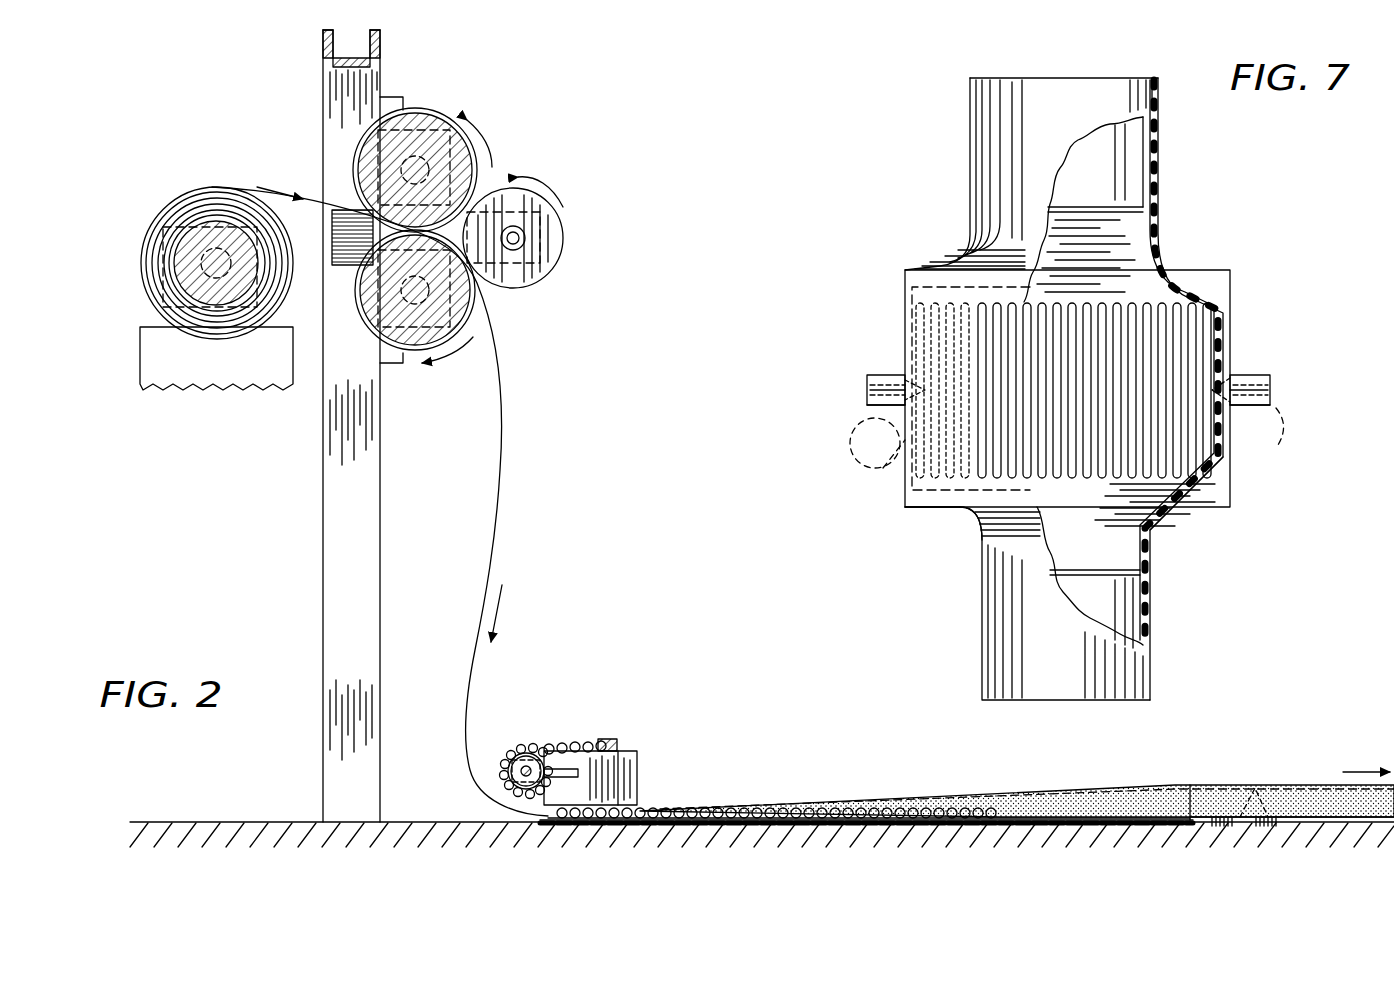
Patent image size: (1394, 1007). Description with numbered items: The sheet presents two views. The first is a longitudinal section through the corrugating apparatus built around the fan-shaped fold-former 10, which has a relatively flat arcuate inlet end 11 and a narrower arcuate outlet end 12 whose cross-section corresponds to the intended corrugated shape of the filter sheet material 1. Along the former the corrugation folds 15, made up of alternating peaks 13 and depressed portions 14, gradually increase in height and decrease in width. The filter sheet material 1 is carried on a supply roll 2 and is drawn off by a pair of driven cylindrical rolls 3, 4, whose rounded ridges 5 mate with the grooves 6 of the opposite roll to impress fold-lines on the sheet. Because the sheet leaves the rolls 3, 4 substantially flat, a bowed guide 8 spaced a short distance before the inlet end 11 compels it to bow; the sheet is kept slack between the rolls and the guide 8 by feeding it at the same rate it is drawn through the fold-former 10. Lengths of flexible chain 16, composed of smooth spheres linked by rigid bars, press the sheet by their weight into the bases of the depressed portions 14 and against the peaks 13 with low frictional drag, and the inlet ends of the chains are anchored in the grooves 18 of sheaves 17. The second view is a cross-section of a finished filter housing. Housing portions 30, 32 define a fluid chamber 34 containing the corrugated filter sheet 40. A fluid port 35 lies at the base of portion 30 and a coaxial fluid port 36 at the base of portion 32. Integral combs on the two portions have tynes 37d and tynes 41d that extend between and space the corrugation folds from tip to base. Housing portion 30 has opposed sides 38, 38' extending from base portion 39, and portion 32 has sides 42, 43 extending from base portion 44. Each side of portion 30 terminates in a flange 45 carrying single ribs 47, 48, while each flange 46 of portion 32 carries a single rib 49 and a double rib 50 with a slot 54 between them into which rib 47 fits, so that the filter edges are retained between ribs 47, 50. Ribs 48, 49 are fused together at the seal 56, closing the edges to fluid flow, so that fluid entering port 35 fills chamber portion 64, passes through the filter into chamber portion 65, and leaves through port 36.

In FIG. 2, the filter sheet material 1 is at (320, 215).
In FIG. 2, the supply roll 2 is at (220, 197).
In FIG. 2, the driven cylindrical roll 3 is at (410, 117).
In FIG. 2, the driven cylindrical roll 4 is at (417, 340).
In FIG. 2, the ridges 5 is at (443, 108).
In FIG. 2, the grooves 6 is at (372, 318).
In FIG. 2, the bowed guide 8 is at (566, 766).
In FIG. 2, the fan-shaped fold-former 10 is at (862, 830).
In FIG. 2, the inlet end 11 is at (532, 822).
In FIG. 2, the outlet end 12 is at (1190, 819).
In FIG. 2, the peaks 13 is at (1128, 790).
In FIG. 2, the depressed portions 14 is at (1050, 828).
In FIG. 2, the corrugation folds 15 is at (1038, 800).
In FIG. 2, the lengths of flexible chain 16 is at (818, 806).
In FIG. 2, the sheaves 17 is at (520, 753).
In FIG. 2, the grooves 18 is at (500, 781).
In FIG. 7, the housing portion 30 is at (957, 167).
In FIG. 7, the housing portion 32 is at (1178, 610).
In FIG. 7, the fluid chamber 34 is at (1133, 303).
In FIG. 7, the fluid port 35 is at (1025, 78).
In FIG. 7, the fluid port 36 is at (1003, 700).
In FIG. 7, the tynes 37d is at (1060, 283).
In FIG. 7, the side 38 is at (1025, 383).
In FIG. 7, the side 38' is at (1267, 284).
In FIG. 7, the base portion 39 is at (1197, 287).
In FIG. 7, the corrugated filter sheet 40 is at (1100, 300).
In FIG. 7, the tynes 41d is at (1131, 505).
In FIG. 7, the side 42 is at (907, 473).
In FIG. 7, the side 43 is at (1223, 460).
In FIG. 7, the base portion 44 is at (963, 520).
In FIG. 7, the flange 45 is at (890, 375).
In FIG. 7, the flange 46 is at (877, 407).
In FIG. 7, the rib 47 is at (897, 373).
In FIG. 7, the rib 48 is at (865, 375).
In FIG. 7, the rib 49 is at (865, 393).
In FIG. 7, the double rib 50 is at (1255, 452).
In FIG. 7, the slot 54 is at (1248, 420).
In FIG. 7, the seal 56 is at (862, 383).
In FIG. 7, the chamber portion 64 is at (1123, 148).
In FIG. 7, the chamber portion 65 is at (1110, 593).